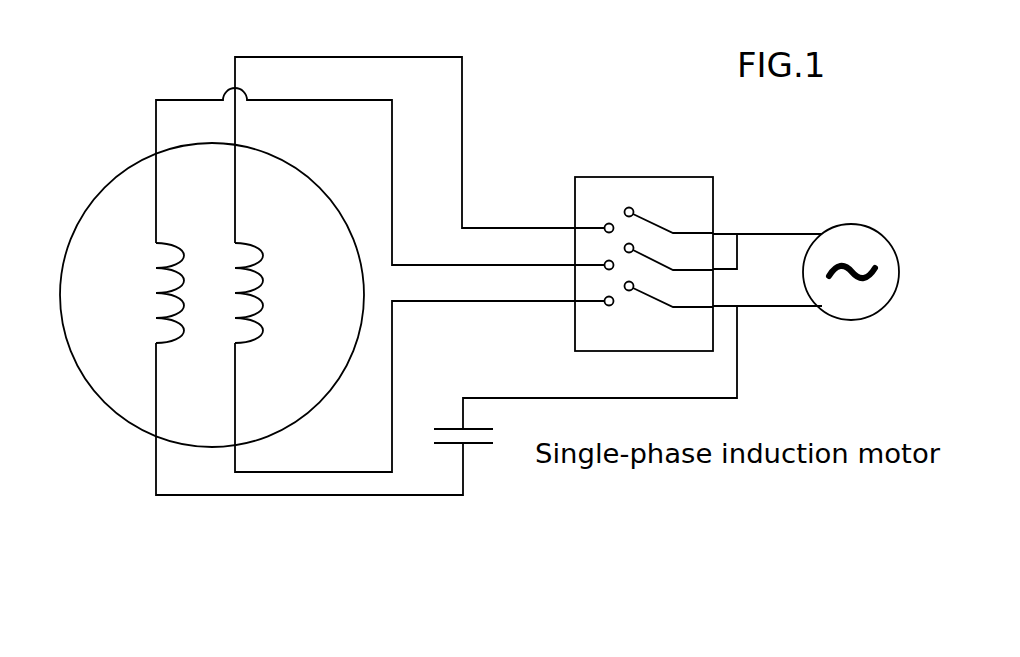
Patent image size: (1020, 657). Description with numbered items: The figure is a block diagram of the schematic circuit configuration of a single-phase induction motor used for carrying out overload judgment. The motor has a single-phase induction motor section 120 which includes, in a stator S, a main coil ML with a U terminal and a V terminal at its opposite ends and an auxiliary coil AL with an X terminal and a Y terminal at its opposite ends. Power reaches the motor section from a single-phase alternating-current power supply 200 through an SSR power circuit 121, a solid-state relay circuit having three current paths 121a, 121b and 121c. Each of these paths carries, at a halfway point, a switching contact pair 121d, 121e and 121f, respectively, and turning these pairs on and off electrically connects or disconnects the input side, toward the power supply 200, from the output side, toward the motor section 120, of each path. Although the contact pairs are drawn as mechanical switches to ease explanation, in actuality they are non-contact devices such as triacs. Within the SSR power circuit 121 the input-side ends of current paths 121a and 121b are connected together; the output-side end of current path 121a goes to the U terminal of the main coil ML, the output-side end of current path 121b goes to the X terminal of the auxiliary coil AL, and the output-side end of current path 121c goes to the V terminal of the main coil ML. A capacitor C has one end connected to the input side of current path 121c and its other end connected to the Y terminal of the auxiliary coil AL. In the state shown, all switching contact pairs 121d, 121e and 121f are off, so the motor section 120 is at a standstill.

The single-phase induction motor section 120 is at (208, 239).
The stator S is at (88, 206).
The SSR power circuit 121 is at (698, 177).
The current path 121a is at (603, 226).
The current path 121b is at (602, 266).
The current path 121c is at (603, 303).
The switching contact pair 121d is at (607, 208).
The switching contact pair 121e is at (612, 255).
The switching contact pair 121f is at (622, 300).
The single-phase alternating-current power supply 200 is at (884, 237).
The capacitor C is at (481, 444).